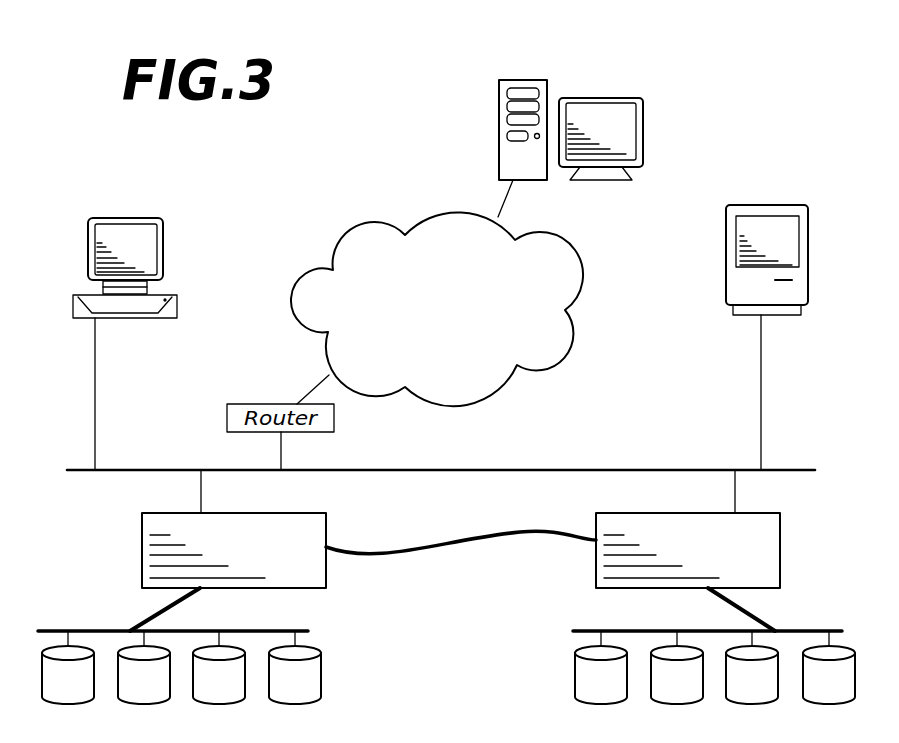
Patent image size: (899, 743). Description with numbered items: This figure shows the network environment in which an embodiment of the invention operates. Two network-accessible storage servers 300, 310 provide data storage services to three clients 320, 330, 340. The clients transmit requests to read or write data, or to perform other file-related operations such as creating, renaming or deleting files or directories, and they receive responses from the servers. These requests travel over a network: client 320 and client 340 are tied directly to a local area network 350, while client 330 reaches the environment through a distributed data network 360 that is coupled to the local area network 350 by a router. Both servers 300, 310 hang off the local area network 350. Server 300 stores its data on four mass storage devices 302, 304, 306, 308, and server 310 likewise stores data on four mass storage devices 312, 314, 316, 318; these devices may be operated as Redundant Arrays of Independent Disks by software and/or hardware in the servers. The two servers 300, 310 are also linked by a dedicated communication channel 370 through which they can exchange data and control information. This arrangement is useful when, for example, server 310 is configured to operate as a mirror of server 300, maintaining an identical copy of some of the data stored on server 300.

The network-accessible storage server 300 is at (228, 550).
The mass storage device 302 is at (68, 667).
The mass storage device 304 is at (144, 667).
The mass storage device 306 is at (219, 667).
The mass storage device 308 is at (295, 667).
The network-accessible storage server 310 is at (688, 550).
The mass storage device 312 is at (601, 667).
The mass storage device 314 is at (677, 667).
The mass storage device 316 is at (752, 667).
The mass storage device 318 is at (829, 667).
The client 320 is at (80, 318).
The client 330 is at (538, 80).
The client 340 is at (783, 205).
The local area network 350 is at (108, 471).
The distributed data network 360 is at (500, 384).
The dedicated communication channel 370 is at (478, 540).